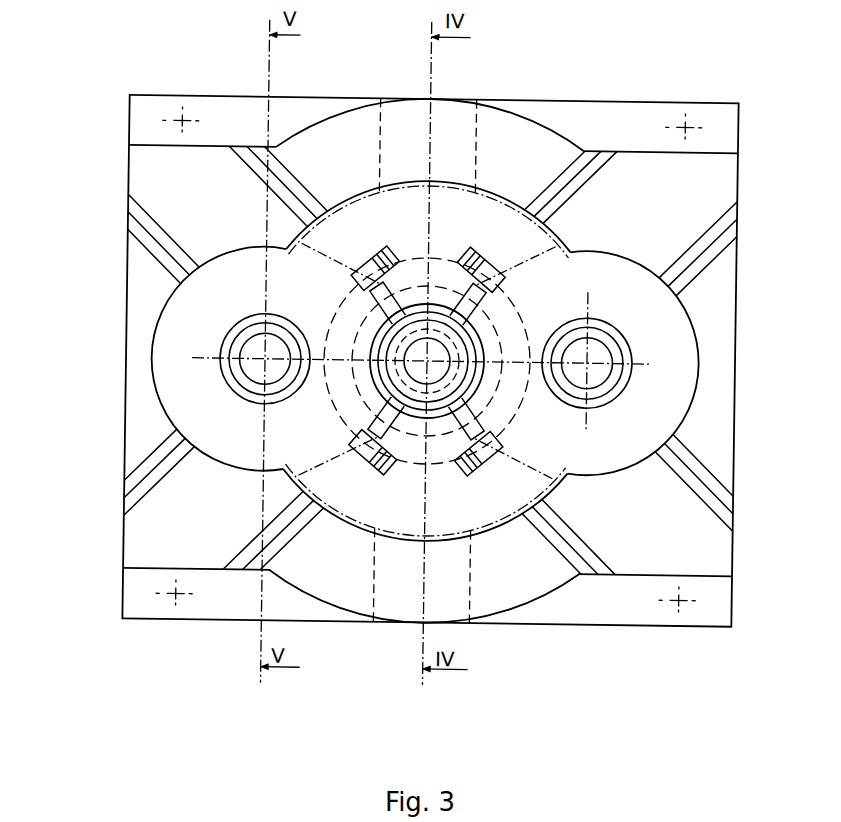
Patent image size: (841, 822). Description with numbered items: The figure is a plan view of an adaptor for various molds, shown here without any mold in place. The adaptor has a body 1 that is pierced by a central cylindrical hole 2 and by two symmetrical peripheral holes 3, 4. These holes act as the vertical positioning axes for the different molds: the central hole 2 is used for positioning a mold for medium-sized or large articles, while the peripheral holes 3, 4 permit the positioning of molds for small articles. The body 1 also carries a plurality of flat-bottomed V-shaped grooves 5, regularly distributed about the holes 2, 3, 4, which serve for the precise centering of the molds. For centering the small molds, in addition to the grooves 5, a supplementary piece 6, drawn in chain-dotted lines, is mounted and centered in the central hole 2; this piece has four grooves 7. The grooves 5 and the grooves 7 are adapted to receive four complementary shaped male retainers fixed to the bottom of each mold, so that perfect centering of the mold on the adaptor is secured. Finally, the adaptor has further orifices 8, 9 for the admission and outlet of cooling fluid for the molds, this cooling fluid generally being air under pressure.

The body 1 is at (214, 180).
The central cylindrical hole 2 is at (407, 353).
The peripheral hole 3 is at (574, 351).
The peripheral hole 4 is at (254, 349).
The flat-bottomed V-shaped grooves 5 is at (252, 188).
The supplementary piece 6 is at (456, 213).
The grooves 7 is at (372, 263).
The orifice 8 is at (447, 303).
The orifice 9 is at (404, 130).